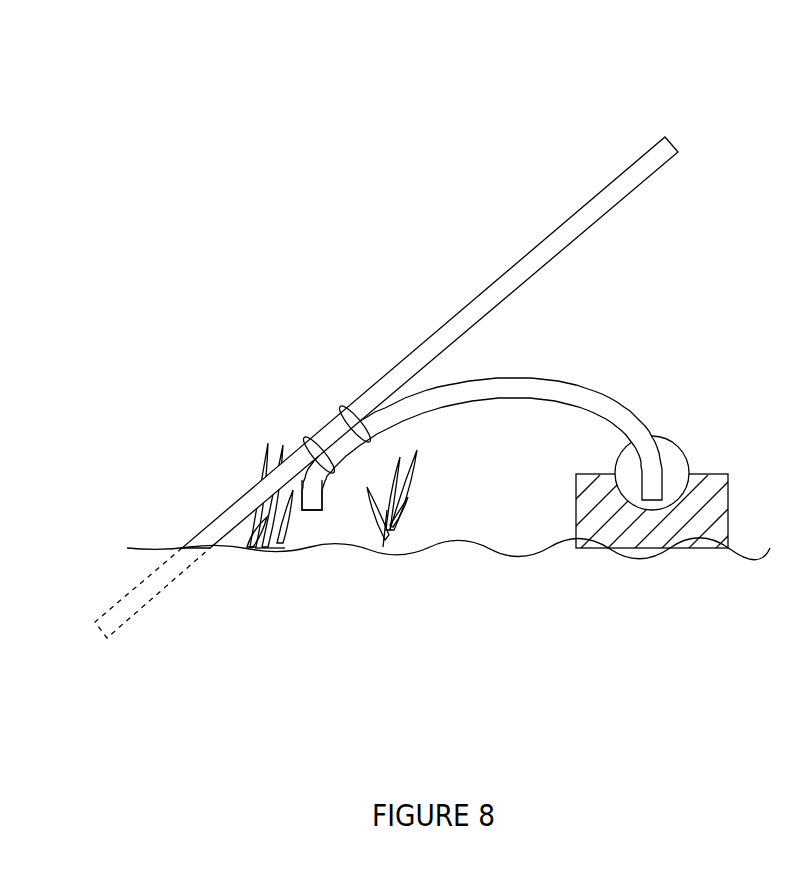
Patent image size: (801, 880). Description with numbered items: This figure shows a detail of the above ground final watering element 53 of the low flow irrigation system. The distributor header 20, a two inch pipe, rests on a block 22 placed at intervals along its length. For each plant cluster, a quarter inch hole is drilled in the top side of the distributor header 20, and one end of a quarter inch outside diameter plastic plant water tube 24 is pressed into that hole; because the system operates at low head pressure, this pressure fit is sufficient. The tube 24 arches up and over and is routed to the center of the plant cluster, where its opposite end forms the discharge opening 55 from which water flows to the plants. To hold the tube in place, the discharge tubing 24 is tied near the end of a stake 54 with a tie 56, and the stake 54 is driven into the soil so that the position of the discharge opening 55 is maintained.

The distributor header 20 is at (675, 452).
The block 22 is at (638, 565).
The plant water tube 24 is at (551, 381).
The above ground final watering element 53 is at (704, 296).
The stake 54 is at (593, 198).
The discharge opening 55 is at (312, 510).
The collar clamp 56 is at (347, 415).